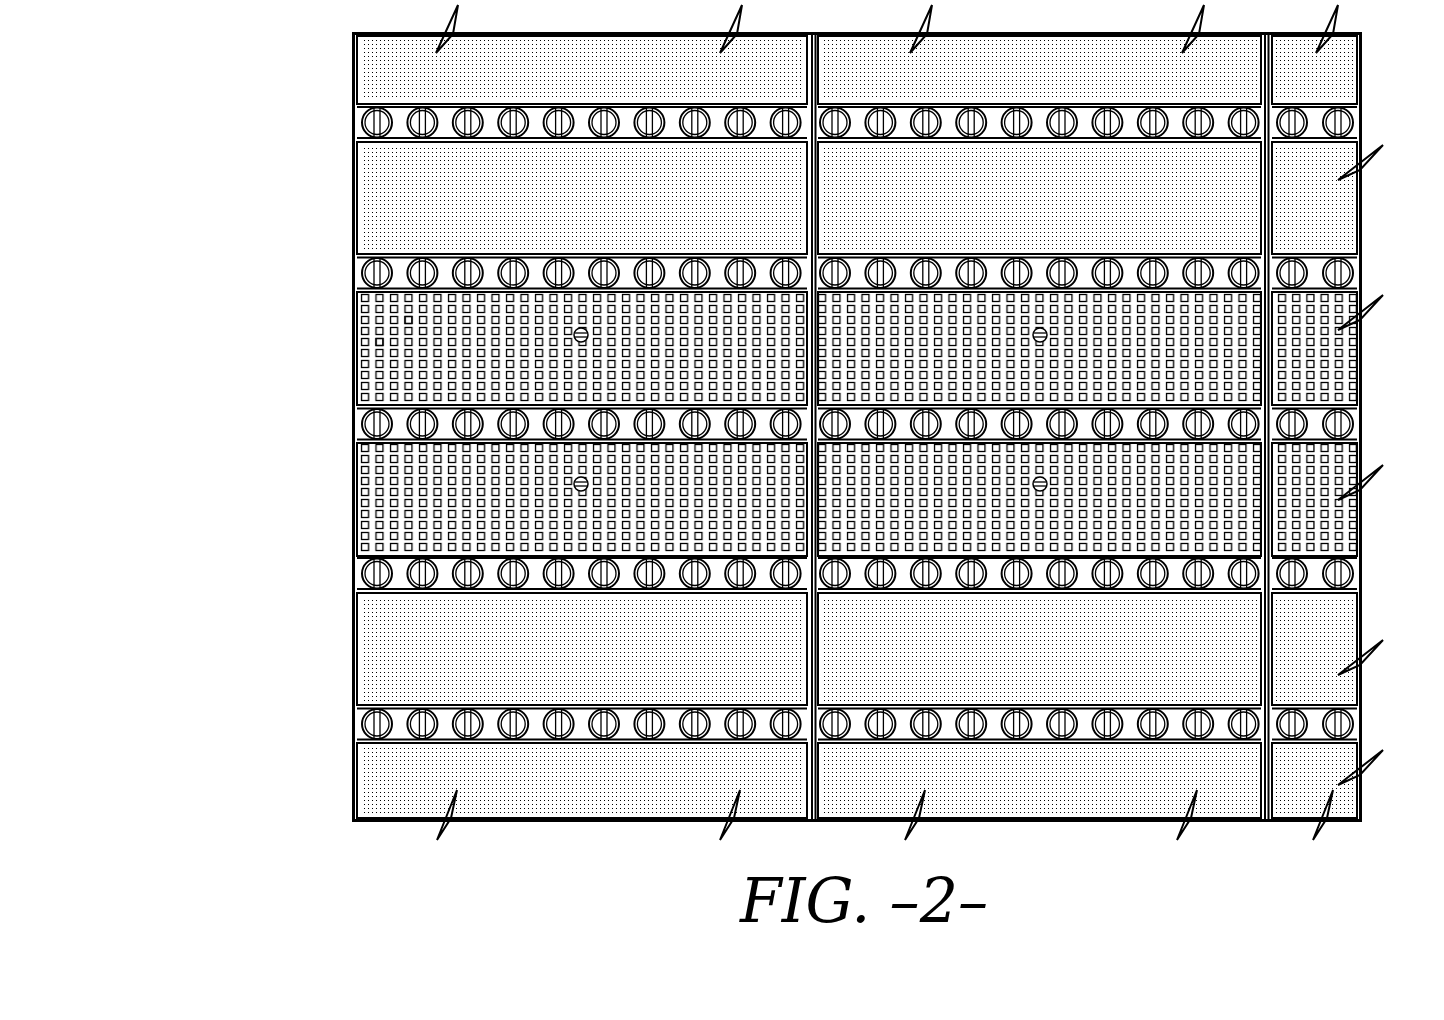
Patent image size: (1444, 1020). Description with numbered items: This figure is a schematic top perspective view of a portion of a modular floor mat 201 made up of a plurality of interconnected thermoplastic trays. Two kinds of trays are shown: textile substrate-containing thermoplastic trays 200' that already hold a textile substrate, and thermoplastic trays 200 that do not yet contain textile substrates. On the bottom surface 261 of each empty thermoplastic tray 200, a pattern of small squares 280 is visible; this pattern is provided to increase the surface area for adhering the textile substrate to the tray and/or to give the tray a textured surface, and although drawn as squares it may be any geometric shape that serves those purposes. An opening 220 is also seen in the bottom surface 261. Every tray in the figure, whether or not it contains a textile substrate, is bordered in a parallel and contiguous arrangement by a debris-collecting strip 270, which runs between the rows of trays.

The modular floor mat 201 is at (773, 427).
The textile substrate-containing thermoplastic tray 200' is at (536, 198).
The pattern of small squares 280 is at (378, 343).
The thermoplastic tray 200 is at (533, 347).
The debris-collecting strip 270 is at (404, 403).
The bottom surface 261 is at (415, 478).
The opening 220 is at (578, 488).